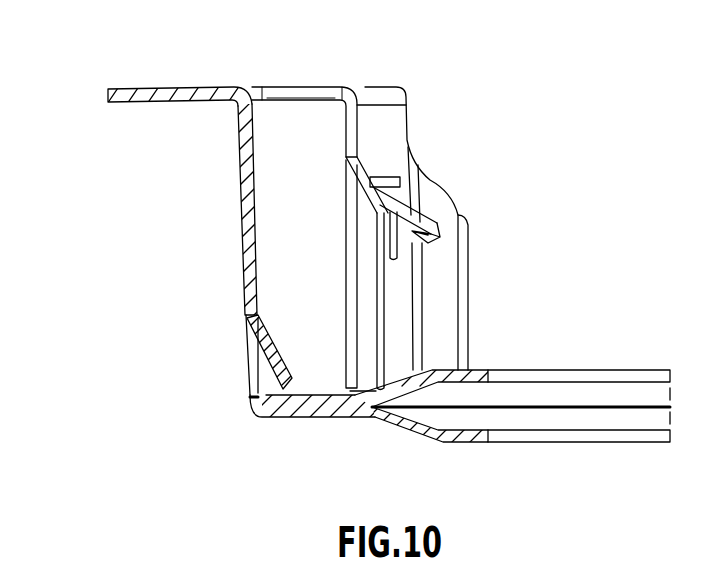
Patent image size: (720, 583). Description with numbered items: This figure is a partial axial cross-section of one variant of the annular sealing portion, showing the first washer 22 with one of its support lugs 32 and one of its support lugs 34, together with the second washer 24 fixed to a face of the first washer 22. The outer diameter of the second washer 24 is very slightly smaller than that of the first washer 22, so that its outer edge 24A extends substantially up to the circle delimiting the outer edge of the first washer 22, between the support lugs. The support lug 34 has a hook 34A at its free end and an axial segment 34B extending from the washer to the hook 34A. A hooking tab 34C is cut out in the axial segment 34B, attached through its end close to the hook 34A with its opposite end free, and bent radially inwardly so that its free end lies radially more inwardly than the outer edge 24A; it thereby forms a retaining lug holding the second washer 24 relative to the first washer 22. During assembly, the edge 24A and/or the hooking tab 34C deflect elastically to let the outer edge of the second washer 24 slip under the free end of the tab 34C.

The first washer 22 is at (577, 442).
The second washer 24 is at (577, 370).
The outer edge of the second washer 24A is at (250, 406).
The support lug 32 is at (450, 140).
The support lug 34 is at (115, 221).
The hook 34A is at (142, 88).
The axial segment 34B is at (238, 184).
The hooking tab 34C is at (279, 352).